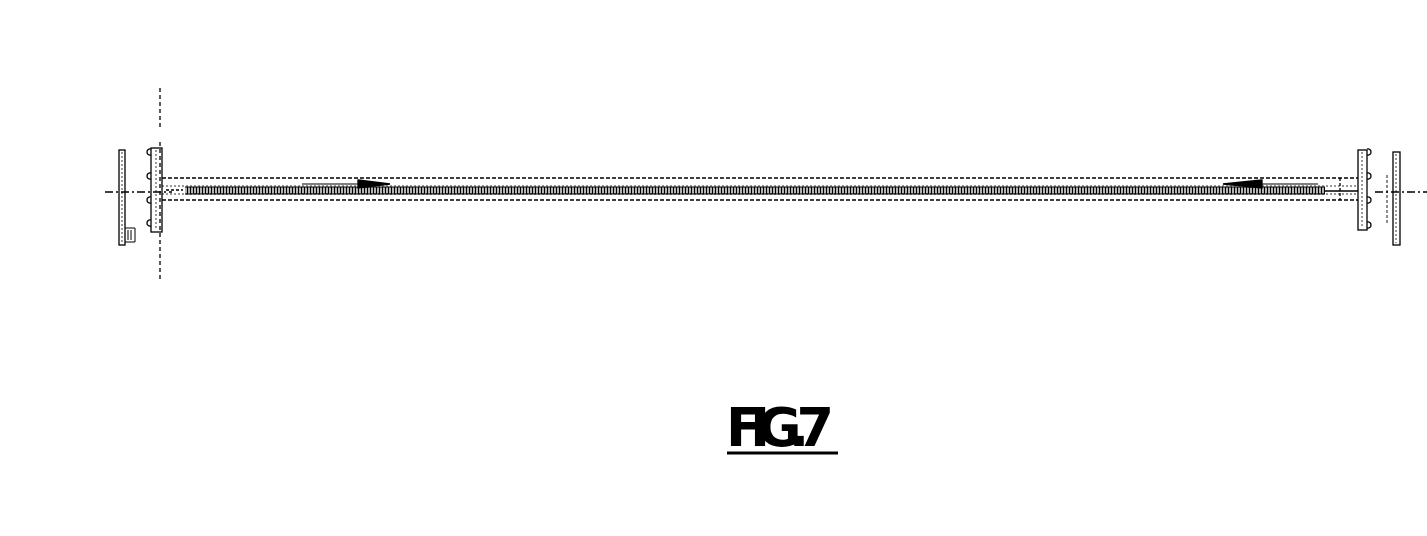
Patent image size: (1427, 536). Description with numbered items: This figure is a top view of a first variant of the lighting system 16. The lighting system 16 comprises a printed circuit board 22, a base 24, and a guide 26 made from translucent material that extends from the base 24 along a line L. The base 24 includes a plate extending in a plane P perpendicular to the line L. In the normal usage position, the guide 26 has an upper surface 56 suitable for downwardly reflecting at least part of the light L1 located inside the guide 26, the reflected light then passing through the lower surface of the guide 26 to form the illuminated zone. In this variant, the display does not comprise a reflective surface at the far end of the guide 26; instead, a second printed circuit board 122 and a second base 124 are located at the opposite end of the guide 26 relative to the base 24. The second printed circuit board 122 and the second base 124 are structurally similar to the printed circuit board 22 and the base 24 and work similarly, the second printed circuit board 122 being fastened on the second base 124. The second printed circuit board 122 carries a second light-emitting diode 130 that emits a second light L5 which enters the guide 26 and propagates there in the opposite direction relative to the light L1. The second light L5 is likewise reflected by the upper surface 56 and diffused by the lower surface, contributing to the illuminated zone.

The lighting system 16 is at (897, 95).
The printed circuit board 22 is at (122, 150).
The base 24 is at (162, 163).
The guide 26 is at (645, 178).
The upper surface 56 is at (828, 187).
The second printed circuit board 122 is at (1360, 150).
The second base 124 is at (1397, 153).
The second light-emitting diode 130 is at (1393, 190).
The line L is at (1416, 192).
The light L1 is at (333, 183).
The second light L5 is at (1278, 183).
The plane P is at (160, 268).